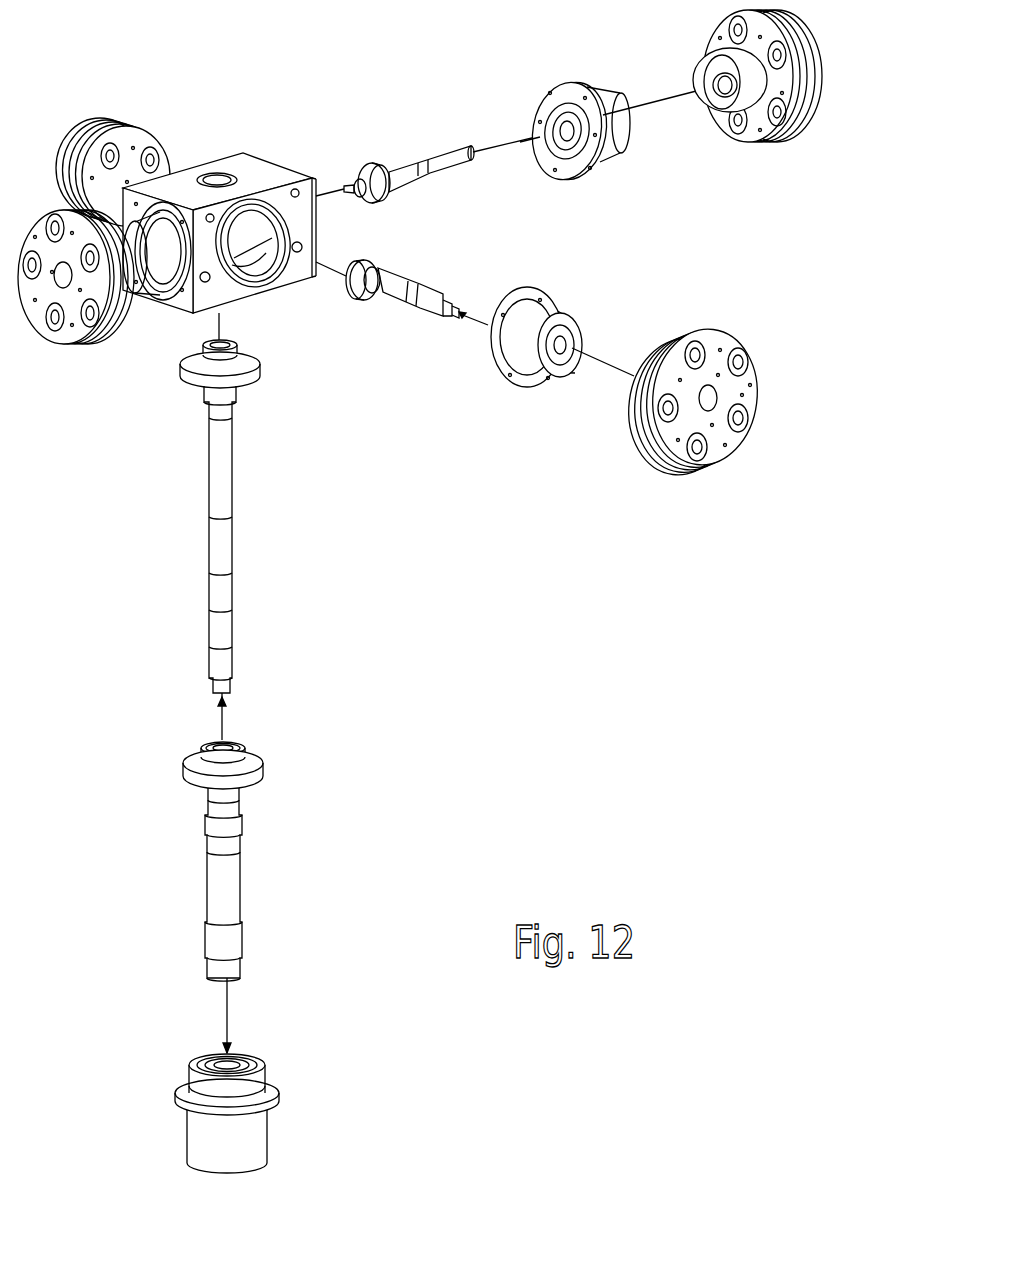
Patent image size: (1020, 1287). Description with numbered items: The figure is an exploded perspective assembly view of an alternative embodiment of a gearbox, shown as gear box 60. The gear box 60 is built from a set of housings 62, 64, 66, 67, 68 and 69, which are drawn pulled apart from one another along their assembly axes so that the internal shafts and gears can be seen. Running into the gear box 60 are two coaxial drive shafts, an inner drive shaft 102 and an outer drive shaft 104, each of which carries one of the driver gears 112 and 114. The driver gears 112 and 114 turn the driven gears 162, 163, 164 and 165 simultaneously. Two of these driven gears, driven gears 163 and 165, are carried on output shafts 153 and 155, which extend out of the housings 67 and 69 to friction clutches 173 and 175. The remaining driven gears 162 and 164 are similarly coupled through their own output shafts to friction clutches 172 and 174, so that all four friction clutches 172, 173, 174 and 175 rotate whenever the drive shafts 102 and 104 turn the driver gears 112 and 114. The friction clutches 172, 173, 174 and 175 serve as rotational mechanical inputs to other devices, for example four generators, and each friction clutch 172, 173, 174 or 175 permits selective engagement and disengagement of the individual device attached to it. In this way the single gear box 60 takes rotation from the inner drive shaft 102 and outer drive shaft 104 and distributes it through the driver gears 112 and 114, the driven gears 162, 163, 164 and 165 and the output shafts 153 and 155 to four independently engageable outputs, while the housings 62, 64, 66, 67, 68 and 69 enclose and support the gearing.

The gear box 60 is at (353, 400).
The housing 62 is at (258, 162).
The housing 64 is at (260, 1128).
The housing 66 is at (143, 160).
The housing 67 is at (562, 313).
The housing 68 is at (157, 275).
The housing 69 is at (620, 138).
The inner drive shaft 102 is at (233, 658).
The outer drive shaft 104 is at (240, 903).
The driver gear 112 is at (253, 358).
The driver gear 114 is at (251, 755).
The output shaft 153 is at (437, 294).
The output shaft 155 is at (453, 148).
The driven gear 162 is at (207, 150).
The driven gear 163 is at (365, 263).
The driven gear 164 is at (187, 327).
The driven gear 165 is at (386, 200).
The friction clutch 172 is at (120, 128).
The friction clutch 173 is at (711, 327).
The friction clutch 174 is at (103, 337).
The friction clutch 175 is at (800, 133).